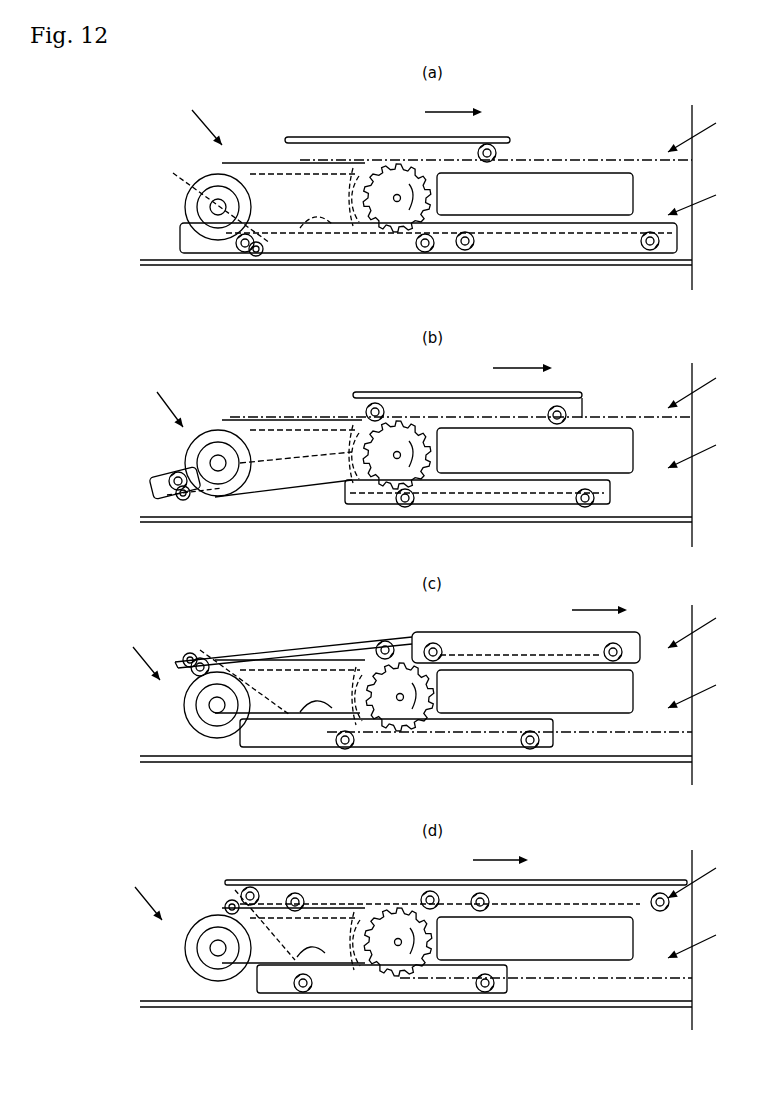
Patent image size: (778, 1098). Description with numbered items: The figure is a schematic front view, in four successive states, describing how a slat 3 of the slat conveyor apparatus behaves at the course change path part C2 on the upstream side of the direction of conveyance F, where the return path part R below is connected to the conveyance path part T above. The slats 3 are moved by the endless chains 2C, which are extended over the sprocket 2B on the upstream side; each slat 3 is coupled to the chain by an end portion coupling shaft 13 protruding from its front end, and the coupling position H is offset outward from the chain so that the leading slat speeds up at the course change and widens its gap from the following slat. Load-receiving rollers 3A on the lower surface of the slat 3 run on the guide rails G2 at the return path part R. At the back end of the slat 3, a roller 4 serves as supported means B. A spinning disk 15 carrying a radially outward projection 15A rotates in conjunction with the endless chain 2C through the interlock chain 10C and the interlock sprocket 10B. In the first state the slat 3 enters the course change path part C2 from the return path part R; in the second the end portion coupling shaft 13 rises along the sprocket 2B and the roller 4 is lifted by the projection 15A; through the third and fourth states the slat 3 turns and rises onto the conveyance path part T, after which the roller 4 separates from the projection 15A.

The slat 3 is at (340, 137).
The load-receiving roller 3A is at (245, 258).
The sprocket on the upstream side of the direction of conveyance 2B is at (395, 172).
The endless chain 2C is at (614, 158).
The roller 4 is at (185, 569).
The supported means B is at (234, 243).
The interlock sprocket 10B is at (184, 208).
The interlock chain 10C is at (268, 160).
The end portion coupling shaft 13 is at (452, 508).
The coupling position H is at (495, 145).
The spinning disk 15 is at (205, 200).
The projection 15A is at (258, 256).
The guide rail G2 is at (326, 266).
The course change path part on the upstream side of the direction of conveyance C2 is at (170, 509).
The direction of conveyance F is at (526, 475).
The conveyance path part T is at (698, 505).
The return path part R is at (698, 570).